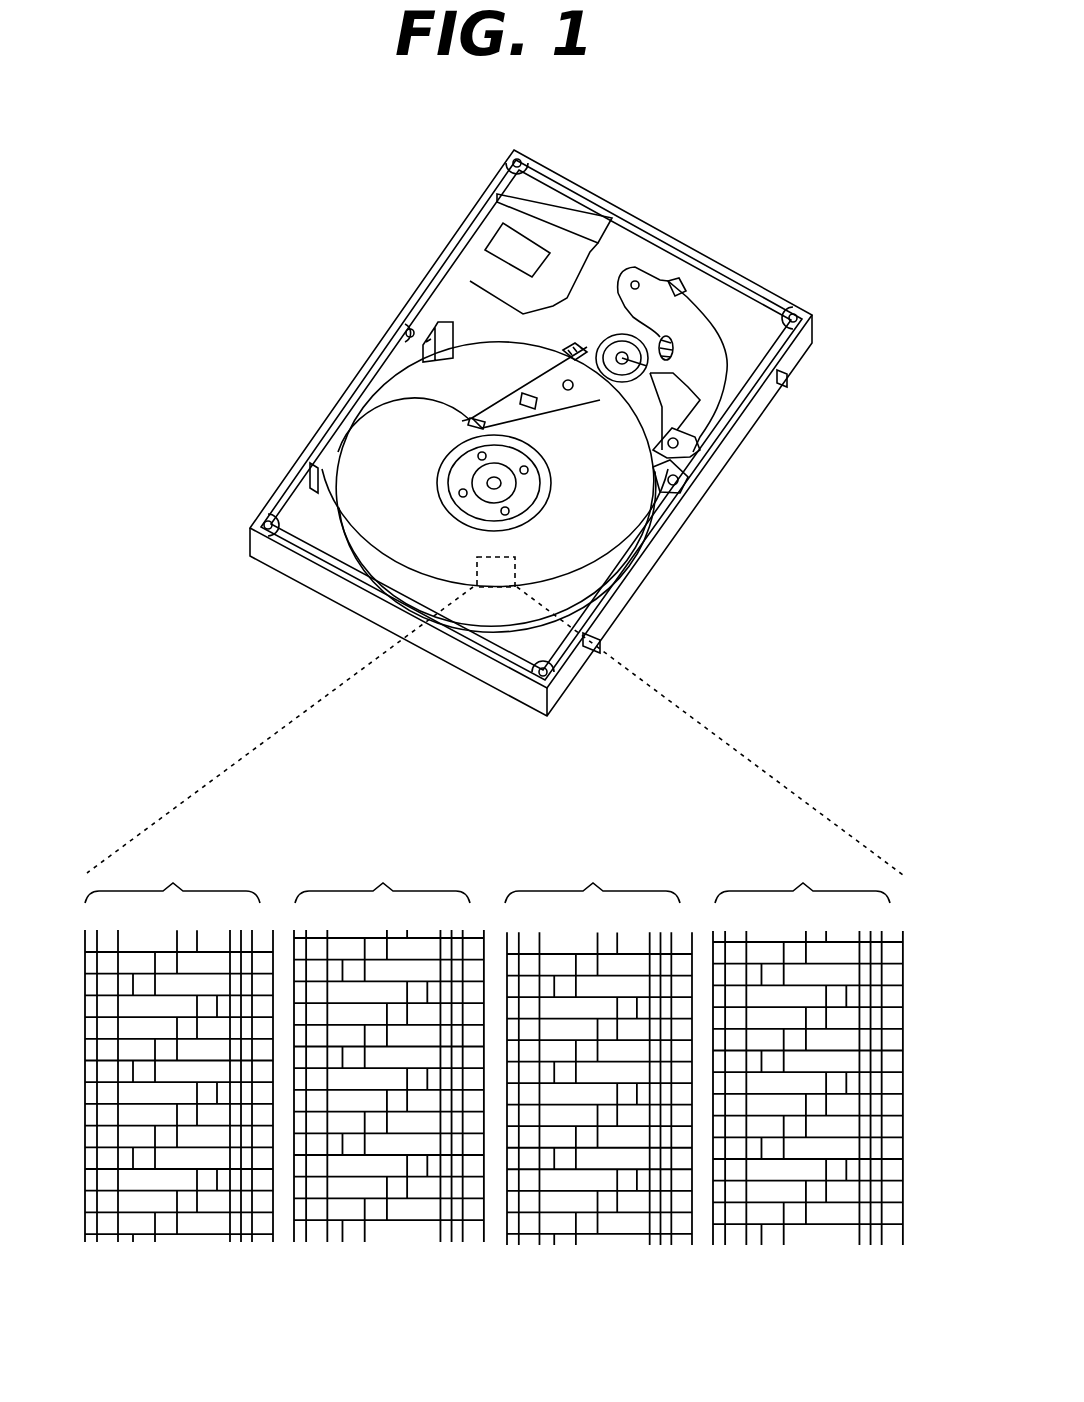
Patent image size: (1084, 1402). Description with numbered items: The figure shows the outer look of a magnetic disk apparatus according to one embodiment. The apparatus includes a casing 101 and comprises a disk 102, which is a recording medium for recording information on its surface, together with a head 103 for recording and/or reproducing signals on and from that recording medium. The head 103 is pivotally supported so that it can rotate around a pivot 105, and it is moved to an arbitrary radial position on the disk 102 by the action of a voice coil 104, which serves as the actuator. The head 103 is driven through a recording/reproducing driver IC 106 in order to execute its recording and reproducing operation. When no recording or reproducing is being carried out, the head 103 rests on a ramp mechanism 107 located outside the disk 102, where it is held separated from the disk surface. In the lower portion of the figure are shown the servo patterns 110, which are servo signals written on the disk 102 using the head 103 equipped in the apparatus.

The casing 101 is at (692, 491).
The disk 102 is at (610, 545).
The head 103 is at (468, 416).
The voice coil 104 is at (712, 374).
The pivot 105 is at (697, 400).
The recording/reproducing driver IC 106 is at (510, 243).
The ramp mechanism 107 is at (421, 313).
The servo patterns 110 is at (494, 1053).